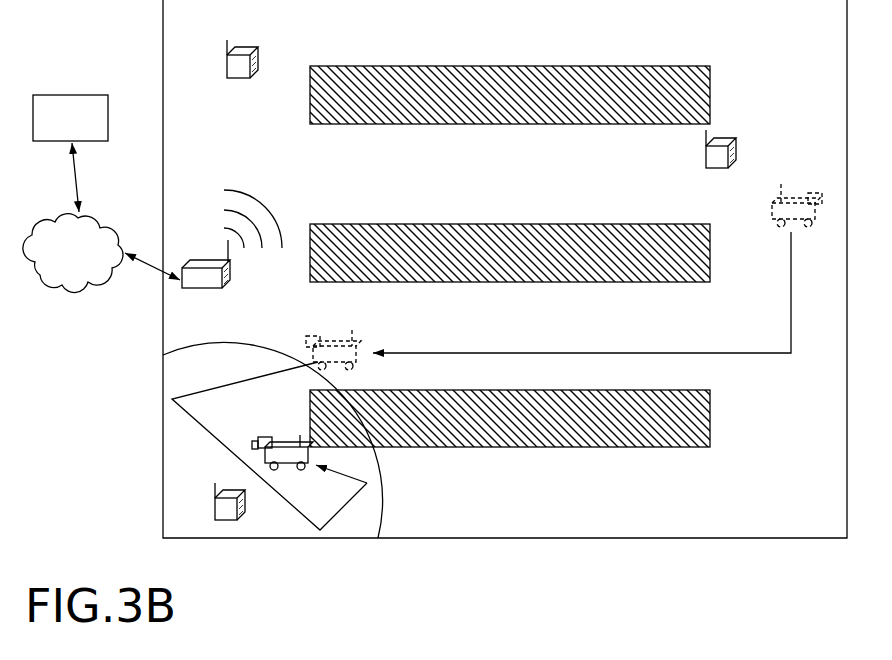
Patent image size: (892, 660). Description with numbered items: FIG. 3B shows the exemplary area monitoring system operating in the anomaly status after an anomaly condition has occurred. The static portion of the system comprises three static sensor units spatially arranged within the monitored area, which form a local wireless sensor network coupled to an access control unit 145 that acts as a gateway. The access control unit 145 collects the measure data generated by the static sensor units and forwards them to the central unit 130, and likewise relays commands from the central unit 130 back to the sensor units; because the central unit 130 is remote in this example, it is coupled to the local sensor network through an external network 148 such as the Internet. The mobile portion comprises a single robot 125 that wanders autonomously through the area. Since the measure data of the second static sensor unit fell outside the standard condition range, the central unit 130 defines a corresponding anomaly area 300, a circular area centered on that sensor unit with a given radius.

The central unit 130 is at (52, 128).
The external network 148 is at (50, 262).
The access control unit 145 is at (186, 266).
The robot 125 is at (280, 440).
The anomaly area 300 is at (385, 520).